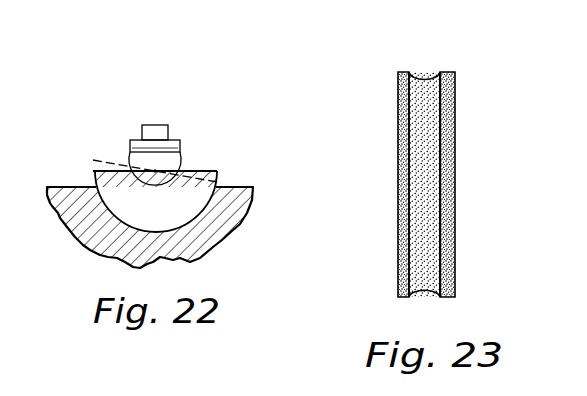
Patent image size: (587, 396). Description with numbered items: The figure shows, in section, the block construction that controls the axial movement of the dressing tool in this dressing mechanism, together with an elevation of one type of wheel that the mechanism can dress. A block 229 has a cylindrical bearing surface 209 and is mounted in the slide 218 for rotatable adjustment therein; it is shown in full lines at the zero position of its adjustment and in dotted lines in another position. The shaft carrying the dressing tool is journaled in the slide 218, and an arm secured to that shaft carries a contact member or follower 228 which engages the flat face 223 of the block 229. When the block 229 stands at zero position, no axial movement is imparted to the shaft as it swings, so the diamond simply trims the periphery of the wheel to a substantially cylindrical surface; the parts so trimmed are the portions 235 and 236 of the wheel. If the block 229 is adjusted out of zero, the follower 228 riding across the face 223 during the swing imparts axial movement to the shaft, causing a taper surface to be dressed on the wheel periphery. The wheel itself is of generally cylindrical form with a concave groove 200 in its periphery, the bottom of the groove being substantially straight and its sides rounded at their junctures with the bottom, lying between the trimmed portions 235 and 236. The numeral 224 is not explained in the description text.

In FIG. 22, the slide 218 is at (207, 237).
In FIG. 22, the cylindrical bearing surface 209 is at (199, 214).
In FIG. 22, the block 229 is at (200, 187).
In FIG. 22, the contact member or follower 228 is at (140, 162).
In FIG. 22, the ball-tipped stylus 224 is at (157, 169).
In FIG. 22, the flat face 223 is at (186, 171).
In FIG. 23, the concave groove 200 is at (425, 80).
In FIG. 23, the part trimmed by the diamond 235 is at (400, 296).
In FIG. 23, the part trimmed by the diamond 236 is at (448, 297).